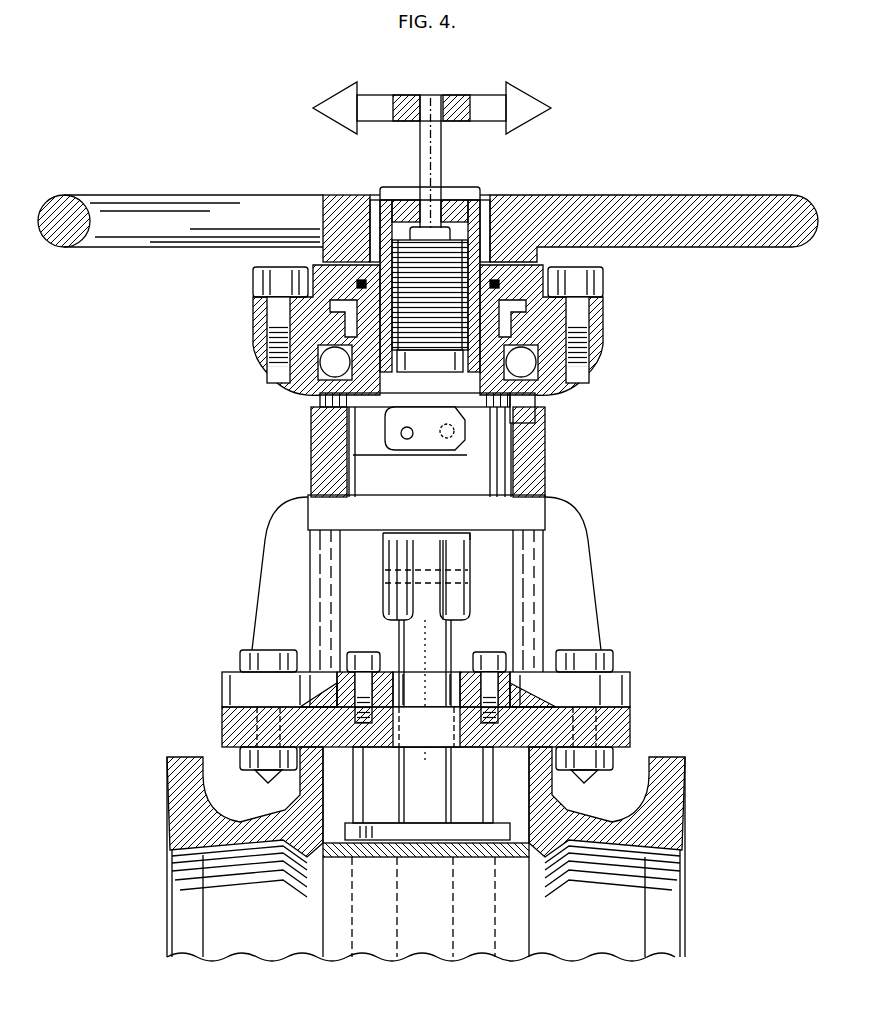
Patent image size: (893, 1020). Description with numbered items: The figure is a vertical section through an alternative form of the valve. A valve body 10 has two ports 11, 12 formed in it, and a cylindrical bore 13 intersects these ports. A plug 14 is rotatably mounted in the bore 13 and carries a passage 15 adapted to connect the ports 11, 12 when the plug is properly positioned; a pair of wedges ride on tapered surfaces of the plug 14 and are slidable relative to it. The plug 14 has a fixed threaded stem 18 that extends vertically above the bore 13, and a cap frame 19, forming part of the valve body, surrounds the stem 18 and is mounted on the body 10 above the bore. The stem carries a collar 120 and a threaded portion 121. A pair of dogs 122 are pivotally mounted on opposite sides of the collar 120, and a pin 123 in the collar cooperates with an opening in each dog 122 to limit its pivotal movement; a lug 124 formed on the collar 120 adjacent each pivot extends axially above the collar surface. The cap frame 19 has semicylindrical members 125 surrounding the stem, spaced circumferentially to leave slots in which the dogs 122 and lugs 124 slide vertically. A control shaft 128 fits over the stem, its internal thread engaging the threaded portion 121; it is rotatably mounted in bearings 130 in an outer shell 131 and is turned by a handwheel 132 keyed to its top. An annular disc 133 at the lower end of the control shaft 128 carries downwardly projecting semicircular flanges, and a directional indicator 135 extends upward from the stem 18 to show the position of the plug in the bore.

The valve body 10 is at (198, 757).
The port 11 is at (276, 944).
The port 12 is at (628, 944).
The cylindrical bore 13 is at (328, 800).
The plug 14 is at (380, 833).
The passage 15 is at (468, 858).
The threaded stem 18 is at (465, 540).
The cap frame 19 is at (573, 609).
The collar 120 is at (540, 435).
The threaded portion 121 is at (392, 275).
The dog 122 is at (395, 438).
The pin 123 is at (520, 458).
The lug 124 is at (395, 413).
The semicylindrical member 125 is at (375, 476).
The control shaft 128 is at (480, 240).
The bearing 130 is at (562, 372).
The outer shell 131 is at (603, 312).
The handwheel 132 is at (717, 246).
The annular disc 133 is at (355, 402).
The directional indicator 135 is at (387, 96).